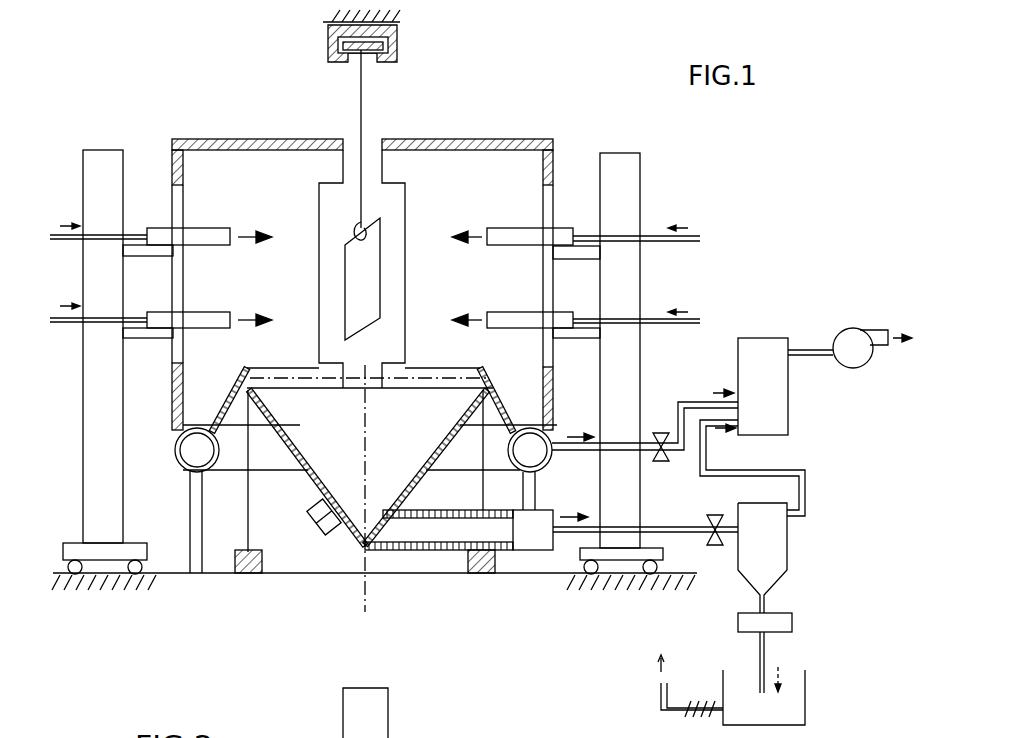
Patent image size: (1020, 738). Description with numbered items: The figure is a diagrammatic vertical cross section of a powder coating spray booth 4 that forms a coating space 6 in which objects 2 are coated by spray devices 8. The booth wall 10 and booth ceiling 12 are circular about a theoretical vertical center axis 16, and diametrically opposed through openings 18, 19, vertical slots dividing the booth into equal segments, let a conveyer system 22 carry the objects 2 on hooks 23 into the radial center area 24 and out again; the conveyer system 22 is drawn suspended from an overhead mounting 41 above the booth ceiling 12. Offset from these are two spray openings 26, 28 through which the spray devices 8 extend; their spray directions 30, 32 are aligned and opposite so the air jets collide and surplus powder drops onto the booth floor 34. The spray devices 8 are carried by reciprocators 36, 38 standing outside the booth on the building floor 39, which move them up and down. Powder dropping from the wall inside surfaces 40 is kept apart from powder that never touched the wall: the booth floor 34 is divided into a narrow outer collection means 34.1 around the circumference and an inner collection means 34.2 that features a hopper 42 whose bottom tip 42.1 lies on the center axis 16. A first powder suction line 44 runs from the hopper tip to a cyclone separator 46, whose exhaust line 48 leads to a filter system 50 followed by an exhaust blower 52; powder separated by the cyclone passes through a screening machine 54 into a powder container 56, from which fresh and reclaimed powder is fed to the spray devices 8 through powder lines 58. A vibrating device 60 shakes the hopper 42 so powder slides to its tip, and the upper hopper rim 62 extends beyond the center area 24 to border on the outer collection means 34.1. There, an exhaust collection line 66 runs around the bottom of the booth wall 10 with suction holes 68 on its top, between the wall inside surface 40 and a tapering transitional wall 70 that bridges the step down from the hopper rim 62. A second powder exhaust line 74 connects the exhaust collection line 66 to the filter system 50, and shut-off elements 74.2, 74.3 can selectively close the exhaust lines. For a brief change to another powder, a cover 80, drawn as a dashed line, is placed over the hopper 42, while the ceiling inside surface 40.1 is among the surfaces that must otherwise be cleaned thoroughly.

In FIG. 1, the objects 2 is at (368, 246).
In FIG. 1, the spray booth 4 is at (478, 124).
In FIG. 1, the coating space 6 is at (494, 182).
In FIG. 1, the spray devices 8 is at (207, 235).
In FIG. 1, the booth wall 10 is at (174, 165).
In FIG. 1, the booth ceiling 12 is at (425, 142).
In FIG. 1, the center axis 16 is at (367, 590).
In FIG. 2, the through opening 18 is at (462, 731).
In FIG. 1, the through opening 19 is at (335, 200).
In FIG. 1, the conveyer system 22 is at (328, 40).
In FIG. 2, the conveyer system 22 is at (345, 698).
In FIG. 1, the hooks 23 is at (358, 90).
In FIG. 1, the center area 24 is at (304, 297).
In FIG. 1, the spray opening 26 is at (548, 198).
In FIG. 1, the spray opening 28 is at (173, 201).
In FIG. 1, the spray directions 30 is at (468, 314).
In FIG. 1, the spray directions 32 is at (252, 228).
In FIG. 1, the booth floor 34 is at (226, 355).
In FIG. 1, the outer collection means 34.1 is at (247, 383).
In FIG. 1, the inner collection means 34.2 is at (367, 362).
In FIG. 1, the reciprocator 36 is at (640, 178).
In FIG. 1, the reciprocator 38 is at (92, 186).
In FIG. 1, the building floor 39 is at (167, 574).
In FIG. 1, the wall inside surfaces 40 is at (182, 165).
In FIG. 1, the ceiling inside surface 40.1 is at (233, 150).
In FIG. 1, the ceiling mount 41 is at (388, 15).
In FIG. 1, the hopper 42 is at (310, 481).
In FIG. 1, the bottom tip 42.1 is at (362, 550).
In FIG. 1, the first powder suction line 44 is at (545, 512).
In FIG. 1, the cyclone separator 46 is at (782, 548).
In FIG. 1, the exhaust line 48 is at (806, 492).
In FIG. 1, the filter system 50 is at (790, 408).
In FIG. 1, the exhaust blower 52 is at (848, 330).
In FIG. 1, the screening machine 54 is at (793, 624).
In FIG. 1, the powder container 56 is at (806, 696).
In FIG. 1, the powder lines 58 is at (56, 240).
In FIG. 1, the vibrating device 60 is at (314, 527).
In FIG. 1, the hopper rim 62 is at (300, 390).
In FIG. 1, the exhaust collection line 66 is at (180, 472).
In FIG. 1, the suction holes 68 is at (176, 452).
In FIG. 1, the transitional wall 70 is at (174, 414).
In FIG. 1, the second powder exhaust line 74 is at (703, 402).
In FIG. 1, the shut-off element 74.2 is at (663, 466).
In FIG. 1, the shut-off element 74.3 is at (716, 547).
In FIG. 1, the cover 80 is at (498, 392).